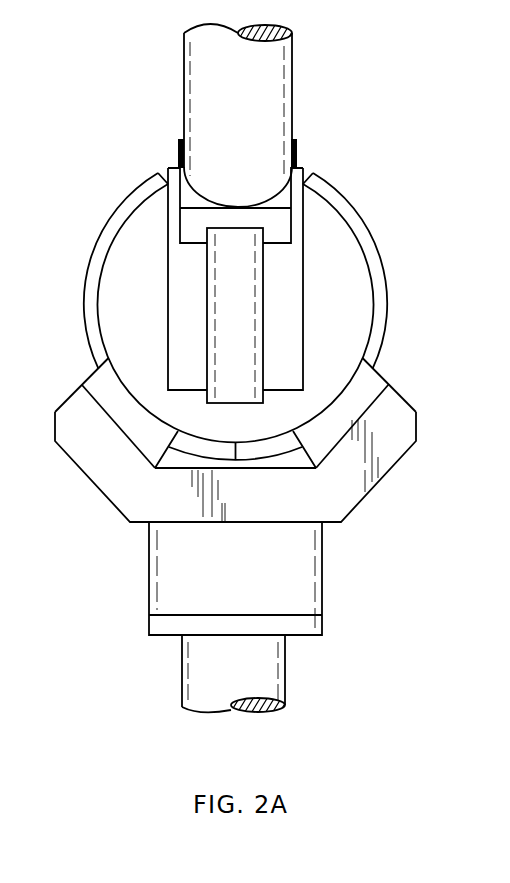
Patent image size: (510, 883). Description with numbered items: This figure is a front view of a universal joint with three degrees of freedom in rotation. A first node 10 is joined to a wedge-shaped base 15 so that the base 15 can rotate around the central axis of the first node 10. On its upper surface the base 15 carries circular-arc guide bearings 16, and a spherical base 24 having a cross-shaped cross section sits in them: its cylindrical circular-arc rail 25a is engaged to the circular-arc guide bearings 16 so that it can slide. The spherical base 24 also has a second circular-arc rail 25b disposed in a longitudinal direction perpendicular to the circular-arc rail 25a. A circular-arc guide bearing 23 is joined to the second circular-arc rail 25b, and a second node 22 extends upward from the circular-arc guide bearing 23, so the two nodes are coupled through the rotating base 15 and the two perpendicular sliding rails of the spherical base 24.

The first node 10 is at (268, 662).
The base 15 is at (133, 498).
The circular-arc guide bearings 16 is at (380, 390).
The second node 22 is at (198, 82).
The circular-arc guide bearing 23 is at (280, 225).
The spherical base 24 is at (116, 265).
The circular-arc rail 25a is at (128, 203).
The second circular-arc rail 25b is at (248, 295).